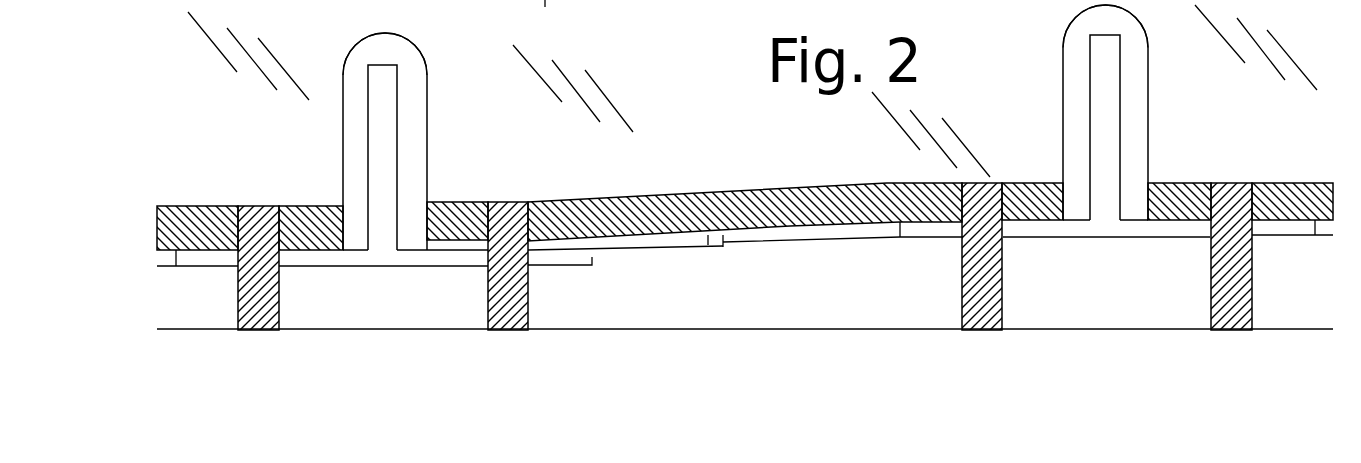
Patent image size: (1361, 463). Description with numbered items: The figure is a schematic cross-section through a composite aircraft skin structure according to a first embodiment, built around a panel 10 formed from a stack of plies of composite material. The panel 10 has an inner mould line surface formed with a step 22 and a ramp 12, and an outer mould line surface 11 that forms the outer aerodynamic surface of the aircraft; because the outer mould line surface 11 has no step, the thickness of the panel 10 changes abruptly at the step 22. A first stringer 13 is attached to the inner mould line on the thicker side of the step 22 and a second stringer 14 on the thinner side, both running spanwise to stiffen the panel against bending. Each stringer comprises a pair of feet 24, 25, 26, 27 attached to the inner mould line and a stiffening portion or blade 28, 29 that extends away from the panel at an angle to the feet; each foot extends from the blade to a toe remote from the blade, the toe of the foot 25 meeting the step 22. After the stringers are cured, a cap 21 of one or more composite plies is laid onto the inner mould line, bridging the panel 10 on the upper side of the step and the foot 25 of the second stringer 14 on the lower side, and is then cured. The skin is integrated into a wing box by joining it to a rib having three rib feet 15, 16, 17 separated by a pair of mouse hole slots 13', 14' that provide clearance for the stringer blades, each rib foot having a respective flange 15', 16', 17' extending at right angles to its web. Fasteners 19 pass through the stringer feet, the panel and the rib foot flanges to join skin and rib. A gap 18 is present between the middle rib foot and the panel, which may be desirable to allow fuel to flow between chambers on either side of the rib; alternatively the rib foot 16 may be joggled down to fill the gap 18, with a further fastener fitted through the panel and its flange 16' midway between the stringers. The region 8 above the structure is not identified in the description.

The sound inlet / acoustic region 8 is at (677, 23).
The panel 10 is at (1103, 307).
The outer mould line surface 11 is at (643, 329).
The ramp 12 is at (792, 238).
The first stringer 13 is at (1114, 110).
The mouse hole slot 13' is at (1072, 24).
The second stringer 14 is at (392, 135).
The mouse hole slot 14' is at (353, 47).
The rib foot 15 is at (280, 163).
The rib foot flange 15' is at (322, 192).
The rib foot 16 is at (668, 90).
The rib foot flange 16' is at (811, 307).
The rib foot 17 is at (1212, 125).
The rib foot flange 17' is at (1285, 135).
The gap 18 is at (823, 233).
The fasteners 19 is at (487, 307).
The cap 21 is at (559, 247).
The step 22 is at (592, 257).
The stringer foot 24 is at (298, 258).
The stringer foot 25 is at (465, 258).
The stringer foot 26 is at (932, 227).
The stringer foot 27 is at (1277, 228).
The stiffening portion 28 is at (380, 128).
The stiffening portion 29 is at (1103, 90).